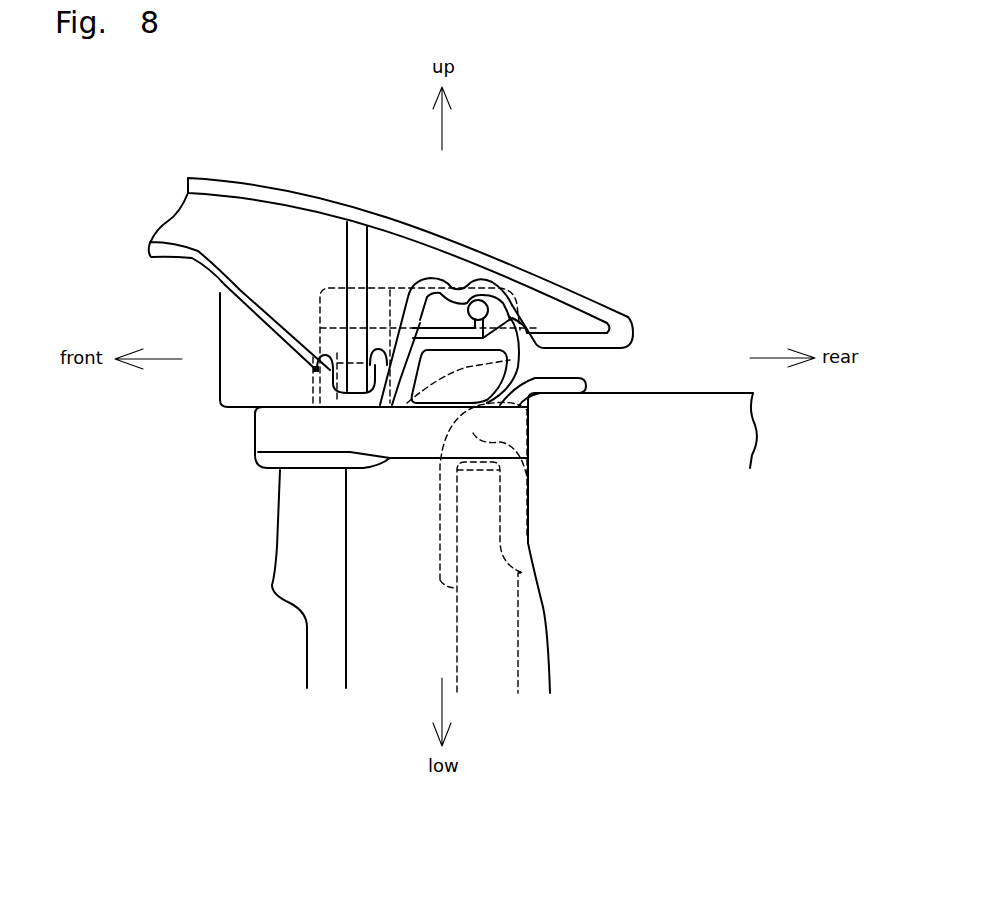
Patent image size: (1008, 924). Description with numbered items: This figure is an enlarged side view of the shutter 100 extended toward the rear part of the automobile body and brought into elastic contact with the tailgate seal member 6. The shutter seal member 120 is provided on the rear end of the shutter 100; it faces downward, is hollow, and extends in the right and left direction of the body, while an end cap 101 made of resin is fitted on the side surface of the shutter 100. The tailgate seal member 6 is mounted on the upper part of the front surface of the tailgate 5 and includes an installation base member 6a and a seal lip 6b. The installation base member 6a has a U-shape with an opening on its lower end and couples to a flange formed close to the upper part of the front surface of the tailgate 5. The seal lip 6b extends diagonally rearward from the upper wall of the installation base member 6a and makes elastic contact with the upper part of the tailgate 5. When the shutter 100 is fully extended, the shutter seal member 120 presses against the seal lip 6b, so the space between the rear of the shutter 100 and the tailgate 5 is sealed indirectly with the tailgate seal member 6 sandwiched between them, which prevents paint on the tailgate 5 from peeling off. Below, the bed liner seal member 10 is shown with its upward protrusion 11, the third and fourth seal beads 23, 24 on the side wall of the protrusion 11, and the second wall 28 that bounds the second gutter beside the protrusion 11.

The shutter 100 is at (584, 250).
The end cap 101 is at (310, 193).
The protrusion 11 is at (377, 327).
The fourth seal bead 24 is at (393, 360).
The third seal bead 23 is at (310, 370).
The second wall 28 is at (270, 433).
The bed liner seal member 10 is at (268, 493).
The shutter seal member 120 is at (427, 410).
The tailgate 5 is at (678, 392).
The tailgate seal member 6 is at (500, 442).
The installation base member 6a is at (513, 515).
The seal lip 6b is at (565, 375).